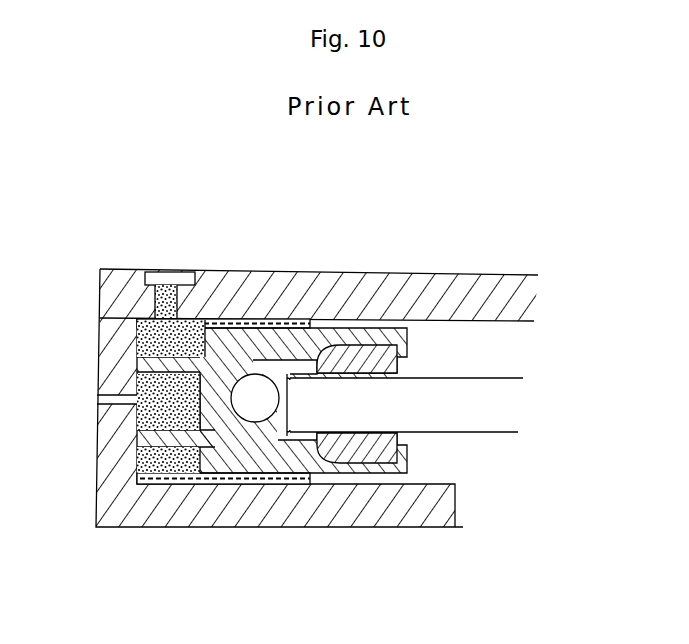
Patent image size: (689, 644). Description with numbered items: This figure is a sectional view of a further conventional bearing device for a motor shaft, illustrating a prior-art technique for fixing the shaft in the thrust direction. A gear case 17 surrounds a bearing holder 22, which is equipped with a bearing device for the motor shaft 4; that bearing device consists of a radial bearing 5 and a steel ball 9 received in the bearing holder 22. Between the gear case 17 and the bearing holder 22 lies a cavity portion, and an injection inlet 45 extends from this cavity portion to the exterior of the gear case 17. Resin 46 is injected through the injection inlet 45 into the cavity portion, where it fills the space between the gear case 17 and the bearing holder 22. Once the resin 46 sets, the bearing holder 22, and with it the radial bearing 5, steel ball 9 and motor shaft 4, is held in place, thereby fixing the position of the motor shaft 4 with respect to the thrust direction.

The motor shaft 4 is at (443, 413).
The radial bearing 5 is at (343, 470).
The steel ball 9 is at (253, 398).
The gear case 17 is at (476, 292).
The bearing holder 22 is at (262, 440).
The injection inlet 45 is at (163, 268).
The resin 46 is at (133, 318).